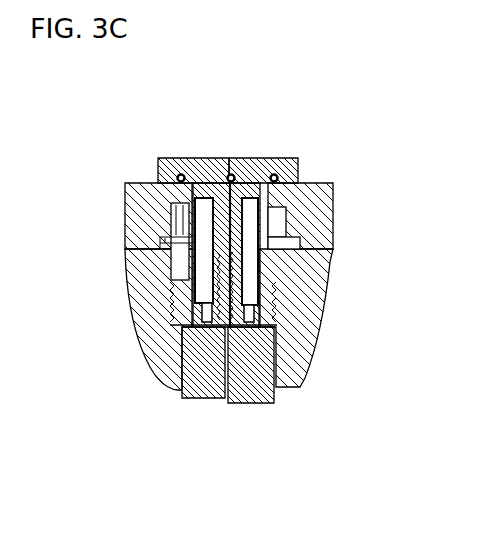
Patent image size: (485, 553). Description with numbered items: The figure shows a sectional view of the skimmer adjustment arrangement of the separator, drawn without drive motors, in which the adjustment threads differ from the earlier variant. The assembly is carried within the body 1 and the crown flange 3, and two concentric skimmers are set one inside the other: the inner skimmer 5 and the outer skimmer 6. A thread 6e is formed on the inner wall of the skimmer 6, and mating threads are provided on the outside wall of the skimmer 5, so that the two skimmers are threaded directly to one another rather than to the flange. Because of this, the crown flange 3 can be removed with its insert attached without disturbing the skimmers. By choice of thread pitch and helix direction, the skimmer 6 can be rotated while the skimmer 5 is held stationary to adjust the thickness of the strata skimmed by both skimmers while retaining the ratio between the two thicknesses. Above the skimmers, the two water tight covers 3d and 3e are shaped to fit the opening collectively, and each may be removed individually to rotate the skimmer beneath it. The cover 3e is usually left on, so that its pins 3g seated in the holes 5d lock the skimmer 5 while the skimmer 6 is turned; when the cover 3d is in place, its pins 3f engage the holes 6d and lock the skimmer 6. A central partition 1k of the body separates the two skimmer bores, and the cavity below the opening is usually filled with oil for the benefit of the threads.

The valve body 1 is at (140, 372).
The crown flange 3 is at (120, 218).
The water tight cover 3d is at (200, 157).
The water tight cover 3e is at (266, 157).
The pins 3f is at (208, 268).
The pins 3g is at (262, 272).
The central partition 1k is at (175, 306).
The holes 5d is at (240, 320).
The holes 6d is at (185, 325).
The thread 6e is at (175, 326).
The skimmer 5 is at (262, 405).
The skimmer 6 is at (197, 403).